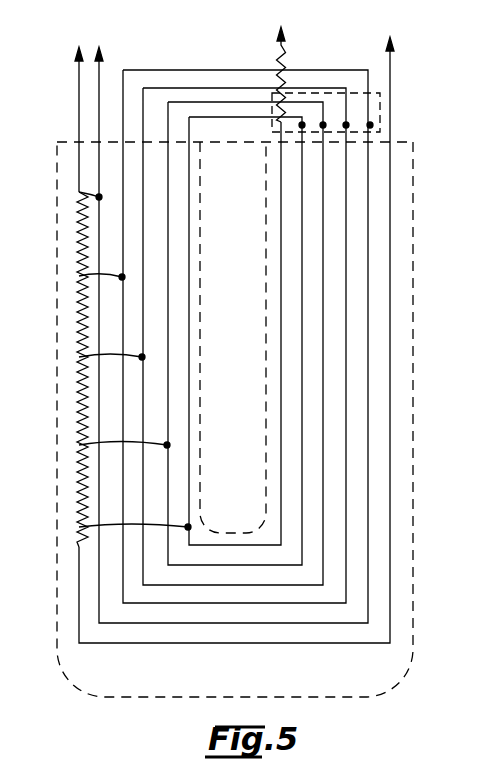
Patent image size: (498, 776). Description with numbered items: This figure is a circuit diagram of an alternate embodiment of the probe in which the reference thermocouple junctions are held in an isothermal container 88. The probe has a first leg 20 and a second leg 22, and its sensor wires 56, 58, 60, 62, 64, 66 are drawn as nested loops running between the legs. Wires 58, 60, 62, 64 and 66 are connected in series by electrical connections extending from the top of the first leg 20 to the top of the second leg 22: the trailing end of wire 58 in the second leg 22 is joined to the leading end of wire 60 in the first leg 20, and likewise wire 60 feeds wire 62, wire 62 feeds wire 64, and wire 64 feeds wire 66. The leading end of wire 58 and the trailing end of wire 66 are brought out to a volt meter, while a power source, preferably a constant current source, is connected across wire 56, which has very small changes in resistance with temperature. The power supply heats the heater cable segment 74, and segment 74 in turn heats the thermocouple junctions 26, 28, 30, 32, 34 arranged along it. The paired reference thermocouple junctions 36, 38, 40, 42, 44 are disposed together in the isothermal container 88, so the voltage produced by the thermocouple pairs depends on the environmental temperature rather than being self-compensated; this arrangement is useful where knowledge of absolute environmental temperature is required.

The first leg 20 is at (60, 143).
The second leg 22 is at (415, 168).
The thermocouple junction 26 is at (79, 192).
The thermocouple junction 28 is at (79, 276).
The thermocouple junction 30 is at (79, 357).
The thermocouple junction 32 is at (79, 445).
The thermocouple junction 34 is at (79, 527).
The reference thermocouple junction 36 is at (285, 113).
The reference thermocouple junction 38 is at (302, 125).
The reference thermocouple junction 40 is at (323, 125).
The reference thermocouple junction 42 is at (346, 125).
The reference thermocouple junction 44 is at (370, 125).
The sensor wire 56 is at (390, 163).
The sensor wire 58 is at (368, 180).
The sensor wire 60 is at (346, 200).
The sensor wire 62 is at (323, 222).
The sensor wire 64 is at (302, 242).
The sensor wire 66 is at (281, 263).
The heater cable segment 74 is at (78, 228).
The isothermal container 88 is at (380, 97).